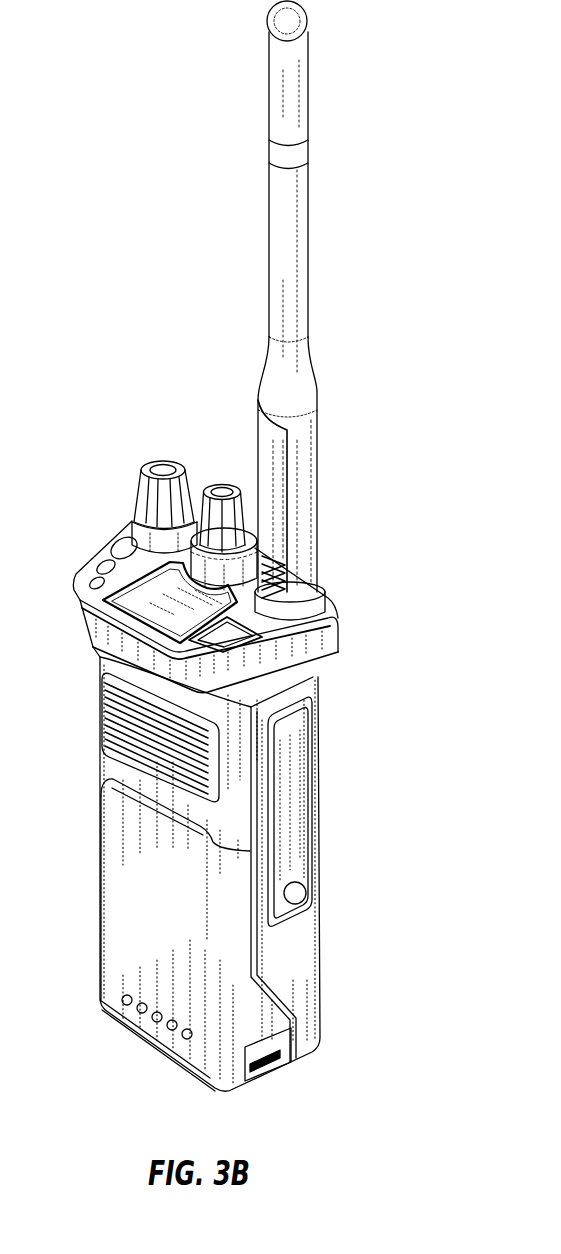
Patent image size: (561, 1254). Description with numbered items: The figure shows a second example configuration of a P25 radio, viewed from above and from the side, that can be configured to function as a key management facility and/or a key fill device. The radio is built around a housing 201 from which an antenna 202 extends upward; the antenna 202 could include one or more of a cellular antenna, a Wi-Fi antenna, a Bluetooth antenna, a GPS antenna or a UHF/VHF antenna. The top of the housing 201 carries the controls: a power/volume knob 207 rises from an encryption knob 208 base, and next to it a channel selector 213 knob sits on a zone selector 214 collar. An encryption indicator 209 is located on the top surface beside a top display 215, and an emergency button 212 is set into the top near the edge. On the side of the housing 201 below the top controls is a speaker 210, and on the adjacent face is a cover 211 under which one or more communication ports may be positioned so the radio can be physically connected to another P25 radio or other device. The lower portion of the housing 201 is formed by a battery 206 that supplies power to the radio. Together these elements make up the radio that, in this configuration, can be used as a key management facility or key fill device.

The housing 201 is at (312, 933).
The antenna 202 is at (308, 90).
The battery 206 is at (127, 960).
The power/volume knob 207 is at (147, 462).
The encryption knob 208 is at (130, 518).
The encryption indicator 209 is at (103, 547).
The speaker 210 is at (102, 718).
The cover 211 is at (300, 808).
The emergency button 212 is at (238, 640).
The channel selector 213 is at (247, 502).
The zone selector 214 is at (250, 557).
The top display 215 is at (127, 605).